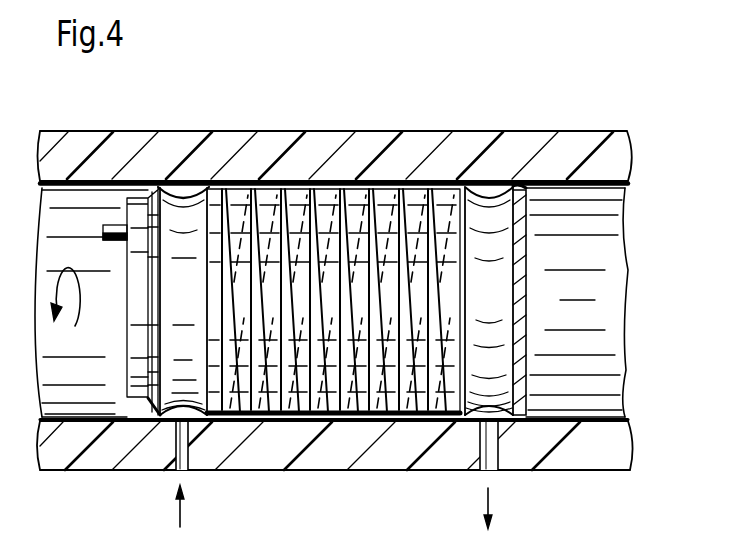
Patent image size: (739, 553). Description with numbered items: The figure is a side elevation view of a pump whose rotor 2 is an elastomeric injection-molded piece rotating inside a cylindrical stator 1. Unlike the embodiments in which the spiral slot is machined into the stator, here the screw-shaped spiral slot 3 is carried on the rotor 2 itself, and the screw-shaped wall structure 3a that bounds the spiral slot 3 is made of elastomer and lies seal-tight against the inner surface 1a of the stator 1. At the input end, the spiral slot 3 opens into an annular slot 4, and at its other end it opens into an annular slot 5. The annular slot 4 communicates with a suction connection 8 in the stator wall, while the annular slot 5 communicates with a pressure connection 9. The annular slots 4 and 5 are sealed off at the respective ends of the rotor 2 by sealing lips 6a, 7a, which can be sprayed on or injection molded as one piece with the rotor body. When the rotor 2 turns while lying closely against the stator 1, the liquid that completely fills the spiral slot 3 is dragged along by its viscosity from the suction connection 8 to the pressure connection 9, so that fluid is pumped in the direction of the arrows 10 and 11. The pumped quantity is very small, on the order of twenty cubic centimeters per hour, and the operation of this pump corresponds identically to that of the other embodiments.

The stator 1 is at (611, 163).
The inner surface of the stator 1a is at (620, 186).
The rotor 2 is at (136, 395).
The spiral slot 3 is at (443, 187).
The wall structure 3a is at (408, 190).
The annular slot 4 is at (190, 309).
The annular slot 5 is at (495, 309).
The sealing lip 6a is at (165, 185).
The sealing lip 7a is at (517, 190).
The suction connection 8 is at (172, 470).
The pressure connection 9 is at (488, 455).
The arrow 10 is at (184, 510).
The arrow 11 is at (491, 503).